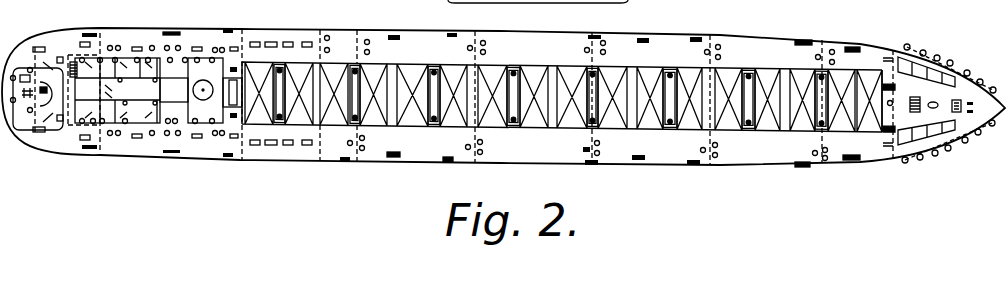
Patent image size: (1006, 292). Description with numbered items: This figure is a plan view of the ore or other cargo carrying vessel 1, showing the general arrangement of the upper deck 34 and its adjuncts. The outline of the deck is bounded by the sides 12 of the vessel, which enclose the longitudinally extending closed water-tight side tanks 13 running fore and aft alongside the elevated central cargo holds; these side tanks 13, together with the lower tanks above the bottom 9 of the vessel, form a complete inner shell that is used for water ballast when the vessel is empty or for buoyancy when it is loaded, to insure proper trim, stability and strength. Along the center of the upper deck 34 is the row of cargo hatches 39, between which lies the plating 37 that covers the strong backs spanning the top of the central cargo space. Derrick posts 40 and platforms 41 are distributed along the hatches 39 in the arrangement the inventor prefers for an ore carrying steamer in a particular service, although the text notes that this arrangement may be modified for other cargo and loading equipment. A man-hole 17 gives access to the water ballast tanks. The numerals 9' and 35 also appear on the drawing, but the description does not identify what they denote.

The ore or other cargo carrying vessel 1 is at (503, 114).
The bottom of the vessel 9 is at (538, 14).
The after deck house 9' is at (166, 17).
The sides of the vessel 12 is at (262, 30).
The side tanks 13 is at (425, 150).
The man-hole 17 is at (933, 101).
The upper deck 34 is at (770, 48).
The hatch cover 35 is at (480, 67).
The plating 37 is at (395, 124).
The hatches 39 is at (337, 121).
The derrick posts 40 is at (597, 72).
The platforms 41 is at (740, 95).